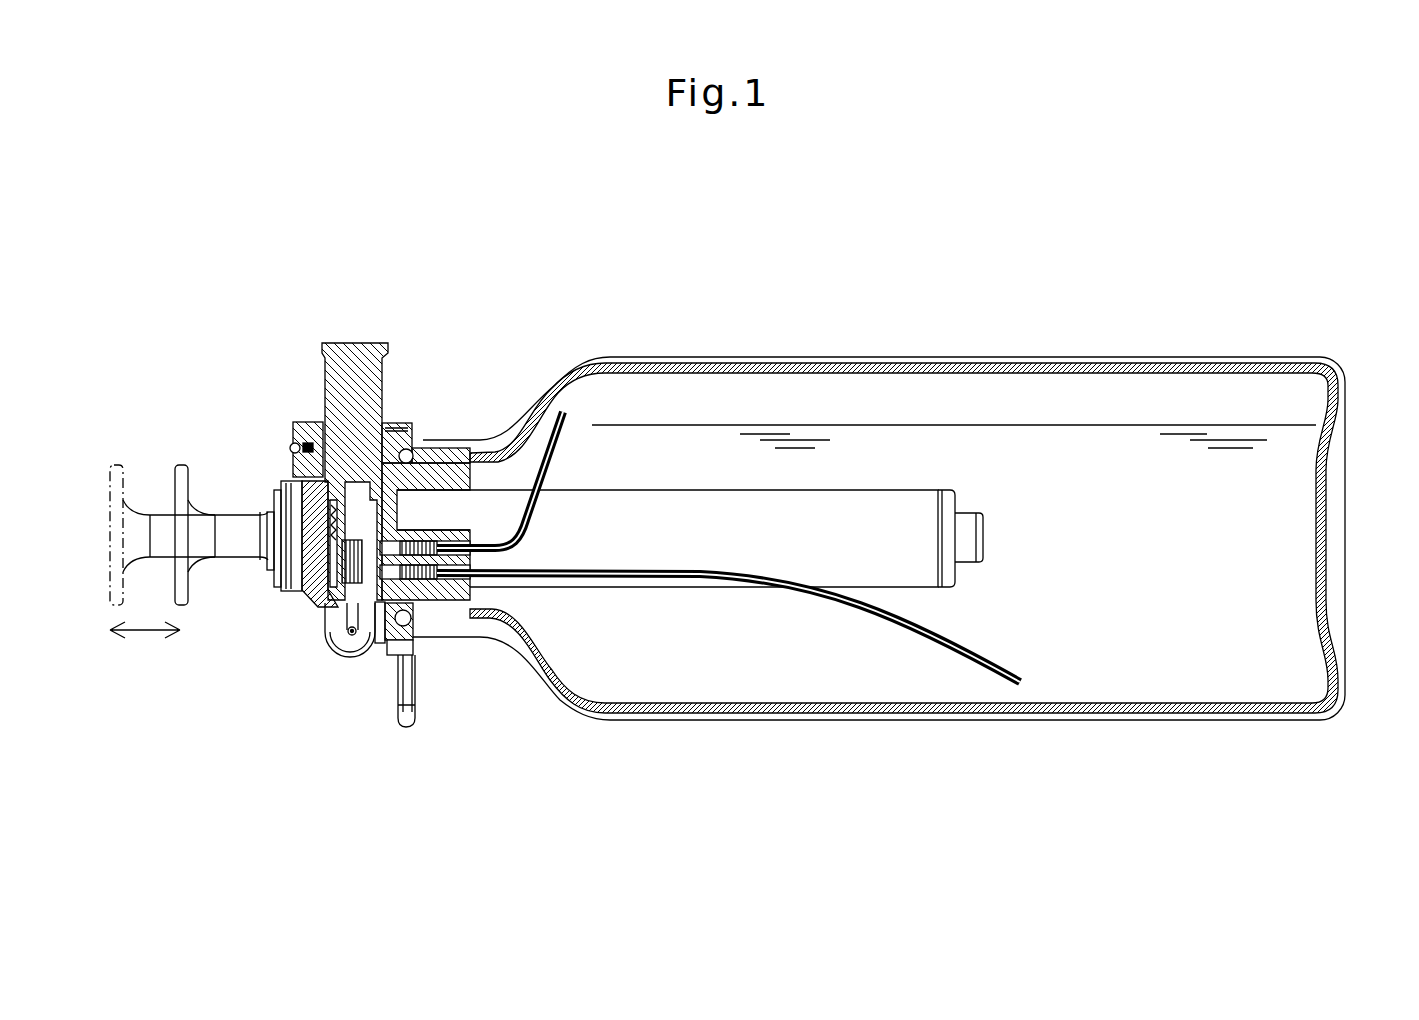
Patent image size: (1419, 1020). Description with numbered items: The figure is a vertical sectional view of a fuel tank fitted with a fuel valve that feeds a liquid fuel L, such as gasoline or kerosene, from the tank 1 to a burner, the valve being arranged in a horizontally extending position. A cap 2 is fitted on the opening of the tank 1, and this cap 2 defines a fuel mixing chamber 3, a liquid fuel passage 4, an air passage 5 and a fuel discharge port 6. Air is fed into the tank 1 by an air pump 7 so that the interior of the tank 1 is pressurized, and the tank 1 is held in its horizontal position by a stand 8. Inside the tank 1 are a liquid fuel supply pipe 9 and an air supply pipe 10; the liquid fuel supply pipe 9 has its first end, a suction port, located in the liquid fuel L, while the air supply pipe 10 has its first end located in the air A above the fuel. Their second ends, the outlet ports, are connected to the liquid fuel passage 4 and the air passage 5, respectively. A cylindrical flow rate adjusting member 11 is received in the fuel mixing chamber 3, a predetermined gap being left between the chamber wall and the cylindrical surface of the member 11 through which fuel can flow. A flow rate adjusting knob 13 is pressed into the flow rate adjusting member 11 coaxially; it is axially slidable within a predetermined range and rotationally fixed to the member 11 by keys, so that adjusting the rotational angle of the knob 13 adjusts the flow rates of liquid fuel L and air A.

The tank 1 is at (912, 360).
The cap 2 is at (393, 445).
The fuel mixing chamber 3 is at (322, 600).
The liquid fuel passage 4 is at (447, 610).
The air passage 5 is at (470, 540).
The fuel discharge port 6 is at (330, 647).
The air pump 7 is at (752, 522).
The stand 8 is at (415, 720).
The liquid fuel supply pipe 9 is at (860, 607).
The air supply pipe 10 is at (553, 452).
The flow rate adjusting member 11 is at (360, 653).
The flow rate adjusting knob 13 is at (349, 372).
The air A is at (1100, 412).
The liquid fuel L is at (1213, 546).